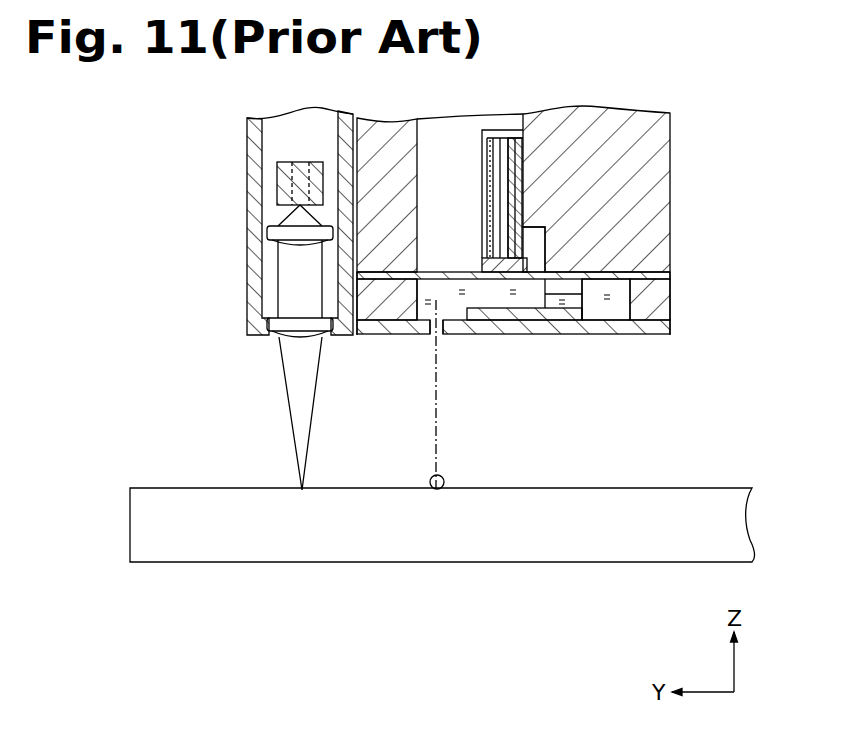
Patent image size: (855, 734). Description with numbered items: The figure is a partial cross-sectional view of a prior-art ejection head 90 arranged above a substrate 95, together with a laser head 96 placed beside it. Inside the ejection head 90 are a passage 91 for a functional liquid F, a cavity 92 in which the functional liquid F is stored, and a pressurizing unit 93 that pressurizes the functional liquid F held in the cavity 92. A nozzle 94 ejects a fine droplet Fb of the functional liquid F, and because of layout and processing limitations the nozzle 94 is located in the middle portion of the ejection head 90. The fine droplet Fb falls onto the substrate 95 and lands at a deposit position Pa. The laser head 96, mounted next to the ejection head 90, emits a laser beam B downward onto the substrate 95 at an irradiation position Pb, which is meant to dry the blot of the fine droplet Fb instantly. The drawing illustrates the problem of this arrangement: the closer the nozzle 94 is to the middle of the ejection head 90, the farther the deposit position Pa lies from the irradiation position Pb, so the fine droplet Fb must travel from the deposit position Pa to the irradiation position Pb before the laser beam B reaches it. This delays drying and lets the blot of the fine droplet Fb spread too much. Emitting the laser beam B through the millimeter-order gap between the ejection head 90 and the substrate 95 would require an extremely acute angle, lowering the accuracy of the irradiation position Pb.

The ejection head 90 is at (551, 297).
The passage 91 is at (618, 322).
The cavity 92 is at (445, 280).
The pressurizing unit 93 is at (482, 168).
The nozzle 94 is at (440, 336).
The substrate 95 is at (593, 488).
The laser head 96 is at (240, 152).
The functional liquid F is at (608, 279).
The laser beam B is at (286, 392).
The irradiation position Pb is at (306, 489).
The fine droplet Fb is at (430, 482).
The deposit position Pa is at (445, 489).